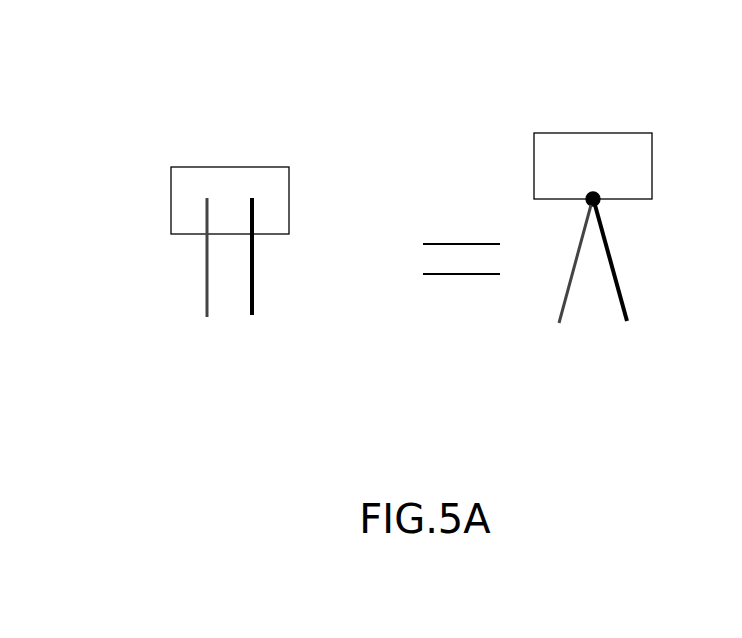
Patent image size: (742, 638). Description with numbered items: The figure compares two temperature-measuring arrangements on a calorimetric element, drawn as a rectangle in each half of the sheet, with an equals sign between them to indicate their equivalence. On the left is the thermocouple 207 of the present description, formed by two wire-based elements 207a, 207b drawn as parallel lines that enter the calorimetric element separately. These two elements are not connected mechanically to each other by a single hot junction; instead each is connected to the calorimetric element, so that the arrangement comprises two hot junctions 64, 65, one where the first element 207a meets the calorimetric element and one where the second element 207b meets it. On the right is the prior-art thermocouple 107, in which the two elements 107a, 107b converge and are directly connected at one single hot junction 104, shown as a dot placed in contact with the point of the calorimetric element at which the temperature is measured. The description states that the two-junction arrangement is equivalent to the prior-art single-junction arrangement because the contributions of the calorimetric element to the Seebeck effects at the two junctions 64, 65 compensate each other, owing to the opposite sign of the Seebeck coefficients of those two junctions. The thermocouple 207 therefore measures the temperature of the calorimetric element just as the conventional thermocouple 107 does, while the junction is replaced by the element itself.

The hot junction 64 is at (189, 181).
The hot junction 65 is at (263, 176).
The thermocouple 207 is at (233, 336).
The wire-based element 207a is at (203, 287).
The wire-based element 207b is at (255, 288).
The hot junction 104 is at (600, 201).
The thermocouple 107 is at (597, 343).
The element 107a is at (573, 260).
The element 107b is at (621, 290).